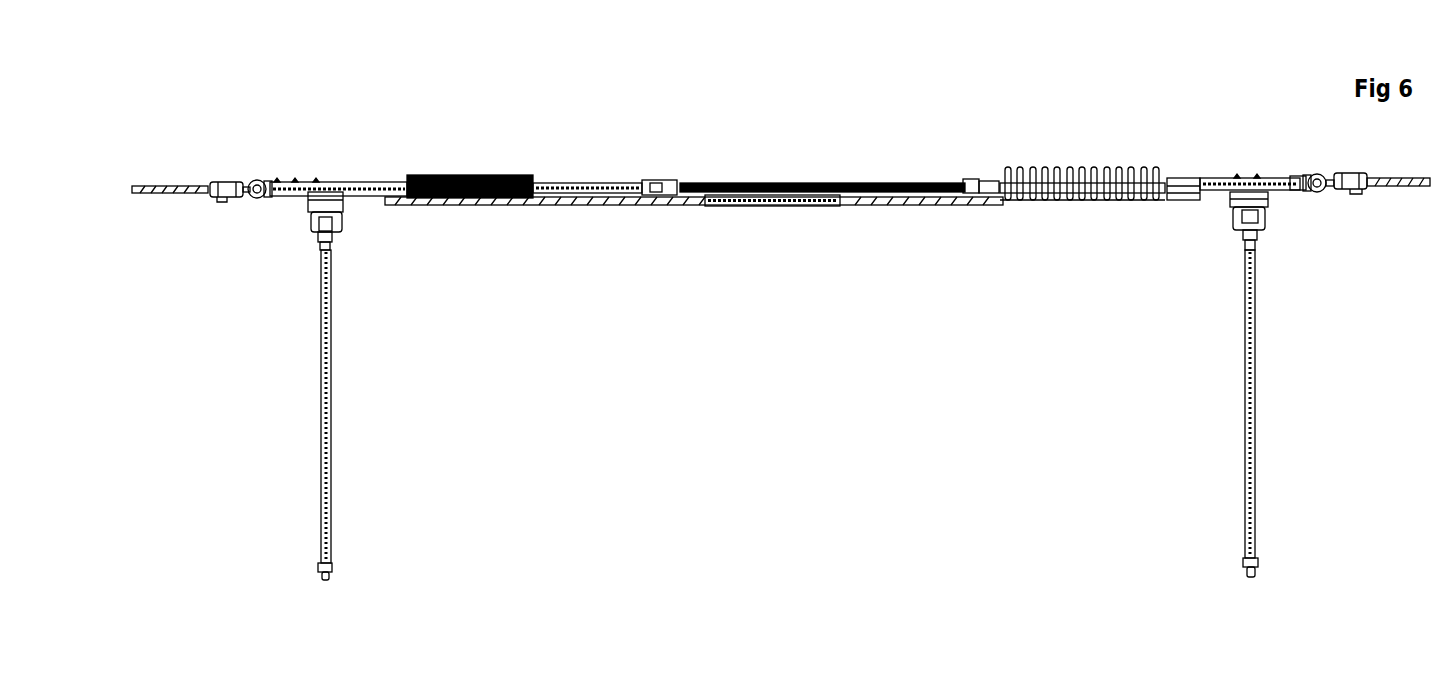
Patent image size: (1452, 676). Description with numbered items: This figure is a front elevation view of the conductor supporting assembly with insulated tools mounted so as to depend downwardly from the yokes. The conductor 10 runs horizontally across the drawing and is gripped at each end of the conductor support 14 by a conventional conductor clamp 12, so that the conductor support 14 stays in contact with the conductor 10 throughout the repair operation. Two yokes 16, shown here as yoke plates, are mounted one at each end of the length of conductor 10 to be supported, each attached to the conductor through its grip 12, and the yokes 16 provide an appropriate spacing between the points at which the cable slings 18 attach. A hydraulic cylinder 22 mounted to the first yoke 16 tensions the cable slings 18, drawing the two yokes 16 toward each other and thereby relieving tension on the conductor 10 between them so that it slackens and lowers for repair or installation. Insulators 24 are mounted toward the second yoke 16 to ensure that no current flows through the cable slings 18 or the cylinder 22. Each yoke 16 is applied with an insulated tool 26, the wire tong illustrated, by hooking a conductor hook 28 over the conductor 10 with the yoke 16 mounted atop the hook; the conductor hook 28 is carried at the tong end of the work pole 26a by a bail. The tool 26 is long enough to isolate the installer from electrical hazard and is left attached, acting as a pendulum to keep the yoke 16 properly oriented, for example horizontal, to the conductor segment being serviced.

The conductor 10 is at (160, 186).
The conductor clamp 12 is at (1371, 145).
The conductor support 14 is at (788, 129).
The yoke 16 is at (322, 174).
The cable sling 18 is at (790, 180).
The hydraulic cylinder 22 is at (497, 177).
The insulator 24 is at (1068, 160).
The insulated tool 26 is at (314, 380).
The work pole 26a is at (327, 505).
The conductor hook 28 is at (352, 224).